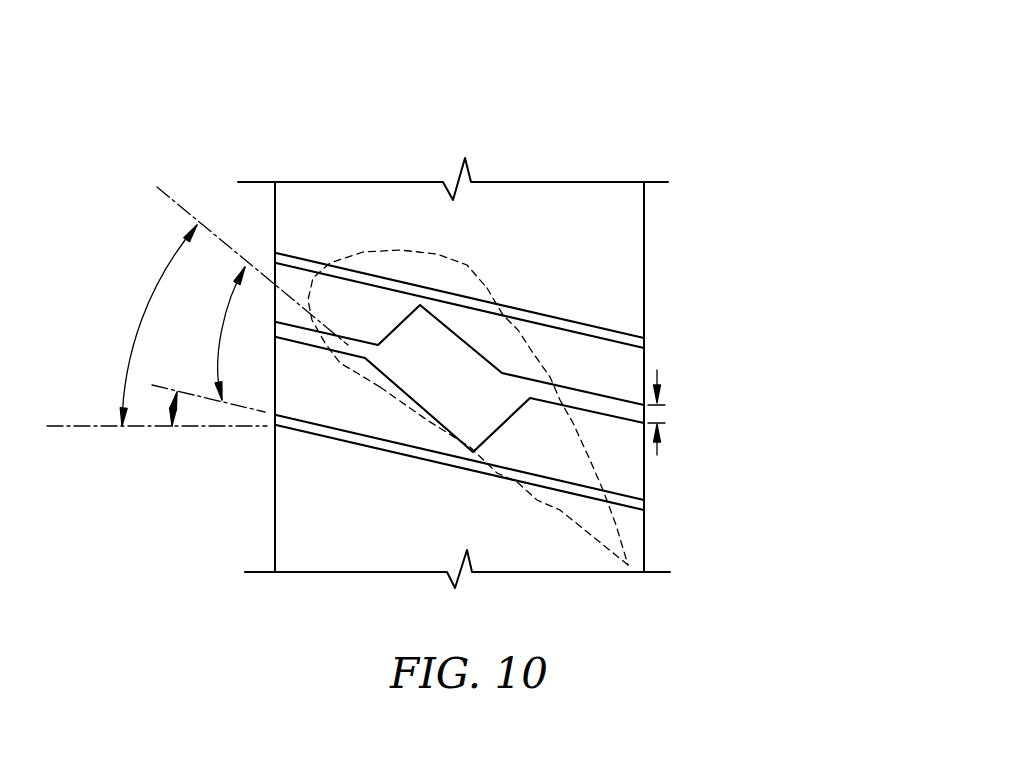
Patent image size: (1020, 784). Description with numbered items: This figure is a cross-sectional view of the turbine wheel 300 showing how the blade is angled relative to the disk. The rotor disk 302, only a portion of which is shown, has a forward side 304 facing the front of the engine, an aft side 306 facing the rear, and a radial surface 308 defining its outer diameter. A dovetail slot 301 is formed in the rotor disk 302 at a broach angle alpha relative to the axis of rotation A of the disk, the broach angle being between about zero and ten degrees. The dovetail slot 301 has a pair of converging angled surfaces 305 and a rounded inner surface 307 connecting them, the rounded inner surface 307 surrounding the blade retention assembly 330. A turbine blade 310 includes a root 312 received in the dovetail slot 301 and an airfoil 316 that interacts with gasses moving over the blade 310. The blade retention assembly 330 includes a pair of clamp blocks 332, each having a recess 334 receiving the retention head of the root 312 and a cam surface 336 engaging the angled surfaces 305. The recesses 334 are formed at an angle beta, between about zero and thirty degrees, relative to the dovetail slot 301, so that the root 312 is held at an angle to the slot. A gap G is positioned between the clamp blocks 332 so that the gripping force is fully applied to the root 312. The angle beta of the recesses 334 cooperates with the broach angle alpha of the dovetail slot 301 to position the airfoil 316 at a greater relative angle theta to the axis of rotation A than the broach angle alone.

The turbine wheel 300 is at (788, 88).
The dovetail slot 301 is at (501, 280).
The rotor disk 302 is at (655, 197).
The forward side 304 is at (277, 202).
The angled surfaces 305 is at (542, 328).
The aft side 306 is at (644, 213).
The rounded inner surface 307 is at (285, 332).
The radial surface 308 is at (585, 203).
The turbine blade 310 is at (550, 377).
The root 312 is at (486, 403).
The airfoil 316 is at (640, 537).
The blade retention assembly 330 is at (690, 386).
The clamp blocks 332 is at (603, 370).
The recess 334 is at (396, 314).
The cam surface 336 is at (607, 330).
The gap G is at (658, 415).
The axis of rotation A is at (90, 428).